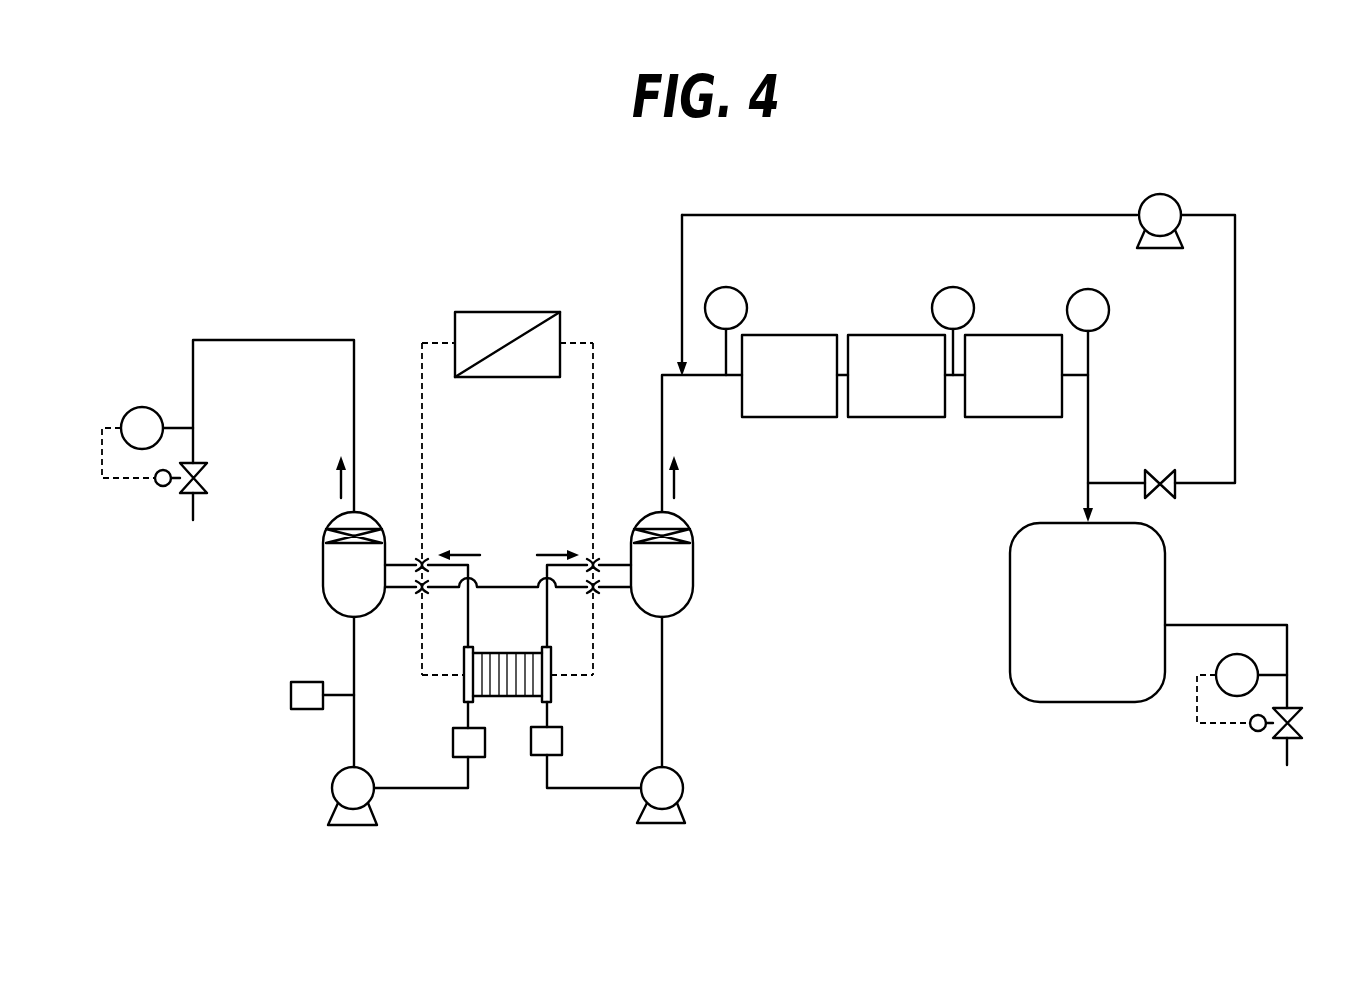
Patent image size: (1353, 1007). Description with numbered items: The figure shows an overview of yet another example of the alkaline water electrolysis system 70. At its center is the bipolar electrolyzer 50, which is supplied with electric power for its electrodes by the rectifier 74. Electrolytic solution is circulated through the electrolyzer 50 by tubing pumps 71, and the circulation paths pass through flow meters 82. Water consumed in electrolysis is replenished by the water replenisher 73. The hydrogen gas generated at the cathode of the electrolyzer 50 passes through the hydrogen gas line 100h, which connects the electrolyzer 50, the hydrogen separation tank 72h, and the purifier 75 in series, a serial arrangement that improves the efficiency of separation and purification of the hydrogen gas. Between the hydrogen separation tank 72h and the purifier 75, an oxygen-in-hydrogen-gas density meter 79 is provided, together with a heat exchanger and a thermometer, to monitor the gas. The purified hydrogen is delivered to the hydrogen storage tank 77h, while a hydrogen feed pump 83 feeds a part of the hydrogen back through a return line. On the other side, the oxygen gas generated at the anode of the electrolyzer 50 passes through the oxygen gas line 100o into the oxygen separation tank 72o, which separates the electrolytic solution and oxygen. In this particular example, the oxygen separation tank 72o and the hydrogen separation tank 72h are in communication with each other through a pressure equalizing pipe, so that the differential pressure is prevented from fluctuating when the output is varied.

The alkaline water electrolysis system 70 is at (358, 250).
The rectifier 74 is at (507, 312).
The oxygen-in-hydrogen-gas density meter 79 is at (745, 302).
The hydrogen feed pump 83 is at (1160, 194).
The oxygen gas line 100o is at (354, 406).
The hydrogen gas line 100h is at (664, 430).
The oxygen separation tank 72o is at (334, 584).
The hydrogen separation tank 72h is at (643, 581).
The purifier 75 is at (882, 387).
The hydrogen storage tank 77h is at (1066, 621).
The bipolar electrolyzer 50 is at (507, 653).
The water replenisher 73 is at (290, 697).
The flow meter 82 is at (453, 745).
The tubing pump 71 is at (332, 790).